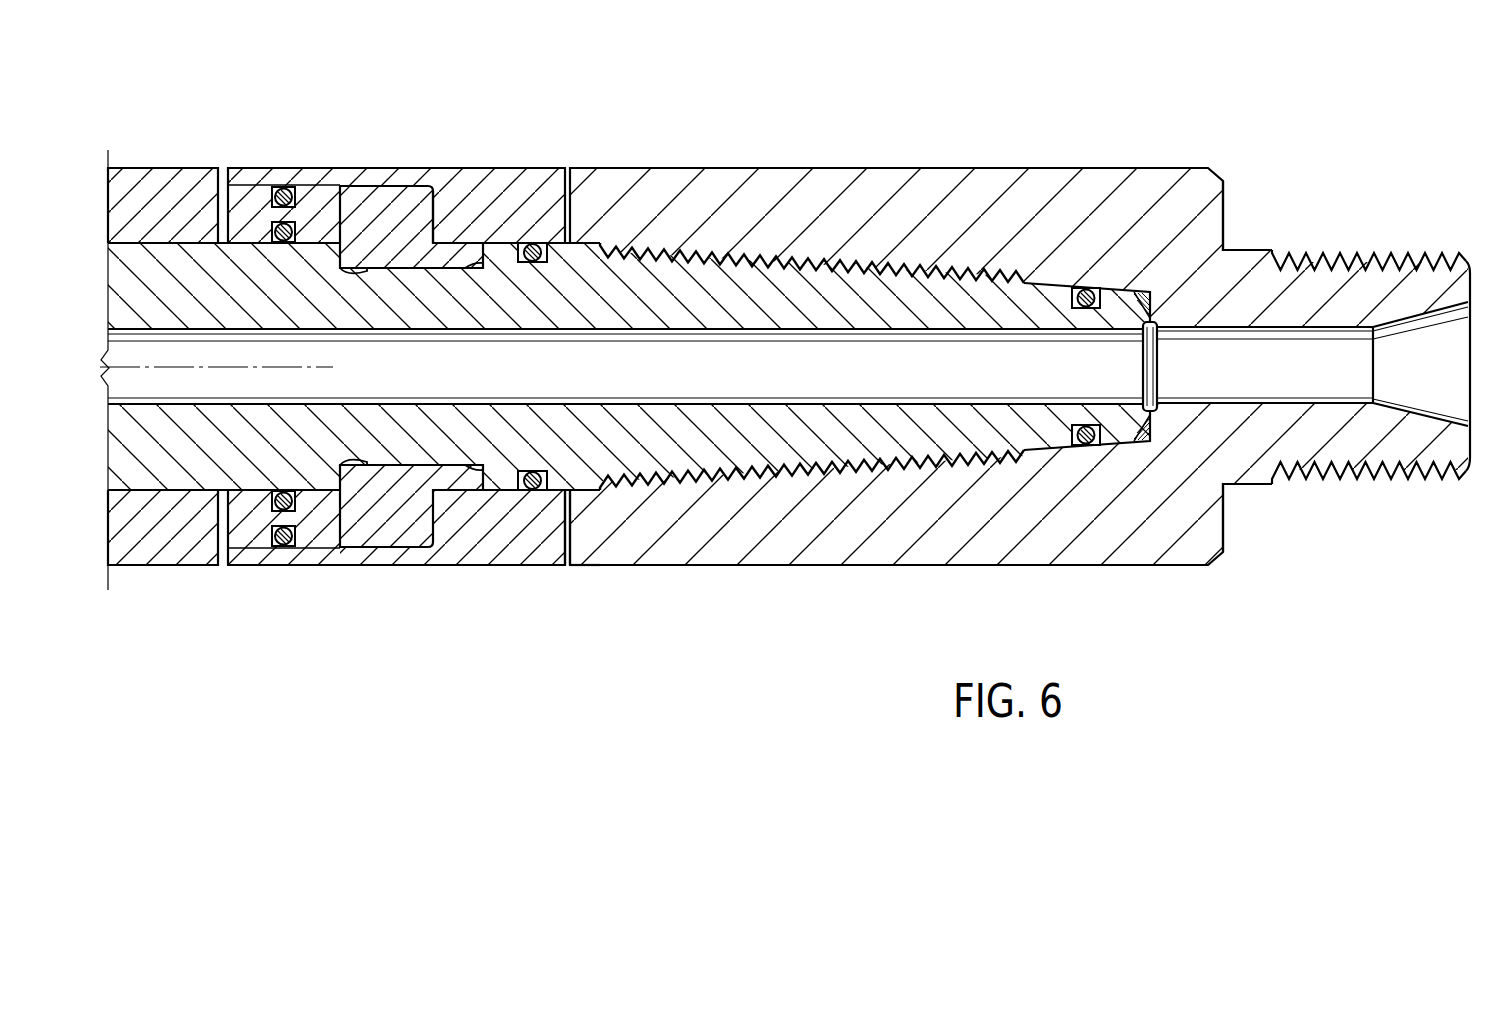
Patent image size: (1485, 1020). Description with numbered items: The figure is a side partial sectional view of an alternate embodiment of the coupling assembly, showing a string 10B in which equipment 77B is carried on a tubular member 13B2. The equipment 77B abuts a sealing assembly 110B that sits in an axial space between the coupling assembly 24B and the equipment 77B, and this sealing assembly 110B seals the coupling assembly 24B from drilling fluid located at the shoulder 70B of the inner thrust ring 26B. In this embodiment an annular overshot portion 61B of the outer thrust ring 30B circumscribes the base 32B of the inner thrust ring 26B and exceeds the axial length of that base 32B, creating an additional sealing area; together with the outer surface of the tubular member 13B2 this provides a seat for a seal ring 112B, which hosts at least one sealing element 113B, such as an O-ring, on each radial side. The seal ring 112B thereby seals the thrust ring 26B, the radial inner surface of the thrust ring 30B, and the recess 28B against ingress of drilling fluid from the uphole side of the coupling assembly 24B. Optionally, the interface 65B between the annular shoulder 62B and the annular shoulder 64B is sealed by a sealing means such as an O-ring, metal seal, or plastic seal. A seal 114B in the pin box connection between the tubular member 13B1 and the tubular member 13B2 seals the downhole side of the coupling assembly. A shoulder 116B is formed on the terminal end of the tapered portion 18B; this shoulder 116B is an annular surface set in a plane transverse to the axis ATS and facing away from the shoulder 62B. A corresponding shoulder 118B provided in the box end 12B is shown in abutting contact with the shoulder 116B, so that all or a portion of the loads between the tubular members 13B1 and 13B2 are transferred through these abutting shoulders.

The string 10B is at (785, 348).
The box end 12B is at (890, 167).
The tubular member 13B1 is at (1138, 155).
The tubular member 13B2 is at (141, 142).
The tapered portion 18B is at (835, 472).
The coupling assembly 24B is at (567, 158).
The inner thrust ring 26B is at (434, 200).
The recess 28B is at (437, 463).
The outer thrust ring 30B is at (509, 160).
The base 32B is at (414, 562).
The annular overshot portion 61B is at (258, 566).
The annular shoulder 62B is at (572, 540).
The annular shoulder 64B is at (565, 532).
The interface 65B is at (568, 578).
The shoulder 70B is at (341, 188).
The equipment 77B is at (160, 566).
The sealing assembly 110B is at (265, 157).
The seal ring 112B is at (223, 210).
The sealing element 113B is at (300, 546).
The seal 114B is at (537, 470).
The shoulder 116B is at (1152, 418).
The corresponding shoulder 118B is at (1137, 292).
The axis ATS is at (340, 364).